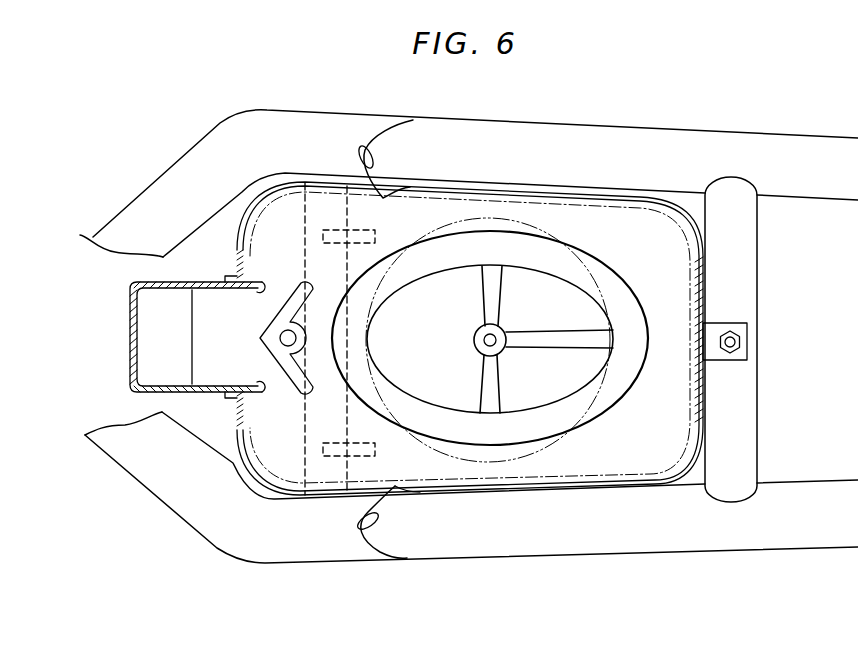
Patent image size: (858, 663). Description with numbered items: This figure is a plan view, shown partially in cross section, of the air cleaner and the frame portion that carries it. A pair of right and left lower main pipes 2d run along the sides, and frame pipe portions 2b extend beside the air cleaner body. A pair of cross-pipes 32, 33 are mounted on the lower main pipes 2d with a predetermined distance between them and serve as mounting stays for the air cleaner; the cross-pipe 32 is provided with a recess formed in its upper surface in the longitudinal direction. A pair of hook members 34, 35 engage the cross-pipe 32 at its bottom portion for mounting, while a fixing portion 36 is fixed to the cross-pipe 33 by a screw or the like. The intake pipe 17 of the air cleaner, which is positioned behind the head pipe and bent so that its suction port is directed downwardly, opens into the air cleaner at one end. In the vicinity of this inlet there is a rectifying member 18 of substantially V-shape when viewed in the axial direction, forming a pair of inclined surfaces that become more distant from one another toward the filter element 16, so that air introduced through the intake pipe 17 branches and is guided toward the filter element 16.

The lower main pipe 2d is at (238, 123).
The frame tube portion 2b is at (558, 138).
The filter element 16 is at (617, 283).
The intake pipe 17 is at (130, 345).
The rectifying member 18 is at (293, 320).
The cross-pipe 32 is at (310, 427).
The cross-pipe 33 is at (745, 444).
The hook member 34 is at (360, 457).
The hook member 35 is at (360, 230).
The fixing portion 36 is at (717, 329).